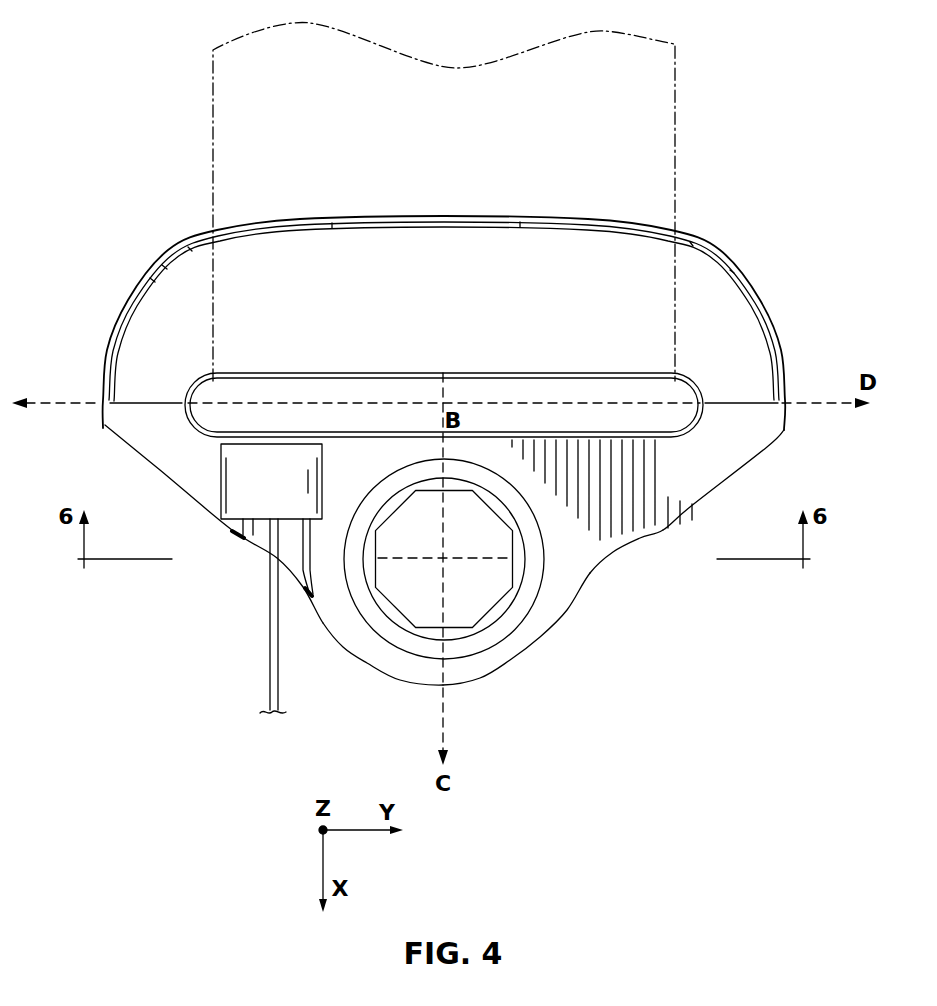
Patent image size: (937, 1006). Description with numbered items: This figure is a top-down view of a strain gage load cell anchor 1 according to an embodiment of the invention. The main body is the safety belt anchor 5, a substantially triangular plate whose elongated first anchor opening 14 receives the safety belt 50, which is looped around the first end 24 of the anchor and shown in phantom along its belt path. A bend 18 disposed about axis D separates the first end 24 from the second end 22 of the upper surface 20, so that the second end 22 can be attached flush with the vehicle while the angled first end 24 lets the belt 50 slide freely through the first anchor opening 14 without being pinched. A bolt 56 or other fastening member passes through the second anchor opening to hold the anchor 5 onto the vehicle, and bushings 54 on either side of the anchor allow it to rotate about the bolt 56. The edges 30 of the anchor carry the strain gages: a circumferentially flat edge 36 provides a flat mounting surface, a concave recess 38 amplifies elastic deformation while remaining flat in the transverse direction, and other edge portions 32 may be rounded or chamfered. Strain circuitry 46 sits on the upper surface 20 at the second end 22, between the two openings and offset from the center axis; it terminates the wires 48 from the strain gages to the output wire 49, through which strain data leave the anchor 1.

The strain gage load cell anchor 1 is at (824, 325).
The safety belt anchor 5 is at (770, 310).
The first anchor opening 14 is at (672, 418).
The bend 18 is at (790, 403).
The upper surface 20 is at (137, 432).
The second end 22 is at (197, 492).
The first end 24 is at (724, 305).
The edges 30 is at (398, 677).
The edge portion 32 is at (525, 657).
The circumferentially flat edge 36 is at (737, 475).
The recess 38 is at (632, 541).
The strain circuitry 46 is at (274, 487).
The wires 48 is at (240, 545).
The output wire 49 is at (268, 630).
The safety belt 50 is at (675, 141).
The bushing 54 is at (497, 647).
The bolt 56 is at (462, 600).